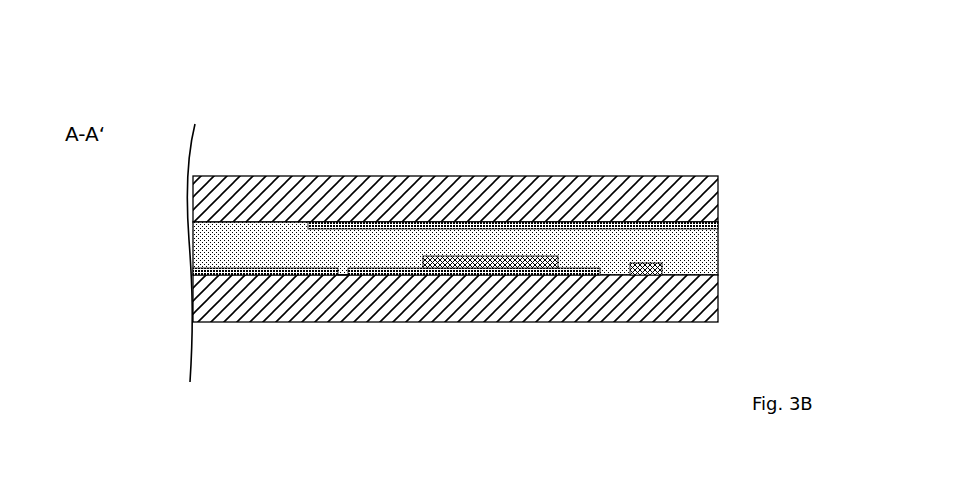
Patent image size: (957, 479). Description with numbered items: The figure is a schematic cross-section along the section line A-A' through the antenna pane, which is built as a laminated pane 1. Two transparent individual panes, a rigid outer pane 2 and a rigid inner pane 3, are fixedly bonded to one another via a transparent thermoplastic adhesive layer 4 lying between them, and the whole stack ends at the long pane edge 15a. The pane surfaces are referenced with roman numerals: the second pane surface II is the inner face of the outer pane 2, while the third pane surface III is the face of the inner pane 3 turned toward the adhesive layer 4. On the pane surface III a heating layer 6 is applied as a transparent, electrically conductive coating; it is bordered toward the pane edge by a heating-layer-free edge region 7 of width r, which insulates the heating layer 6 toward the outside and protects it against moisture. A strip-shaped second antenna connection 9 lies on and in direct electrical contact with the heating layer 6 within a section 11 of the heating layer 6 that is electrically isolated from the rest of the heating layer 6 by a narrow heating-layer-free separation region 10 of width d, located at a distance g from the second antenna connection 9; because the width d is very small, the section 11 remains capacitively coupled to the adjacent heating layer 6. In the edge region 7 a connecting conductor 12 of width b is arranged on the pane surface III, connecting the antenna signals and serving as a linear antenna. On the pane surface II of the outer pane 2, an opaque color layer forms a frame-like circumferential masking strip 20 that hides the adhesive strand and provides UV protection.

The laminated pane 1 is at (258, 122).
The outer pane 2 is at (268, 195).
The inner pane 3 is at (217, 298).
The thermoplastic adhesive layer 4 is at (215, 243).
The heating layer 6 is at (306, 274).
The heating-layer-free edge region 7 is at (671, 267).
The second antenna connection 9 is at (523, 258).
The heating-layer-free separation region 10 is at (344, 267).
The section of the heating layer 11 is at (444, 241).
The connecting conductor 12 is at (638, 263).
The masking strip 20 is at (480, 225).
The width of the connecting conductor b is at (632, 275).
The width of the separation region d is at (338, 275).
The distance of the separation region g is at (348, 347).
The width of the edge region r is at (600, 322).
The second pane surface II is at (718, 253).
The third pane surface III is at (690, 270).
The long pane edge 15a is at (766, 252).